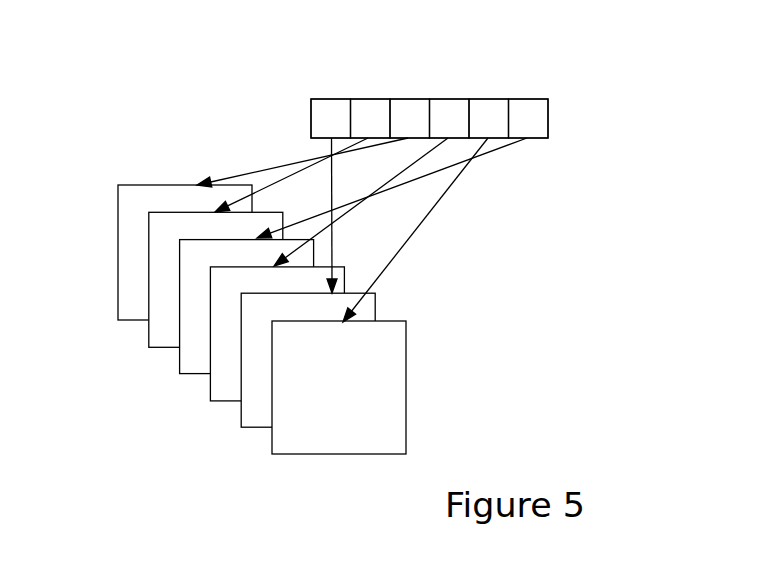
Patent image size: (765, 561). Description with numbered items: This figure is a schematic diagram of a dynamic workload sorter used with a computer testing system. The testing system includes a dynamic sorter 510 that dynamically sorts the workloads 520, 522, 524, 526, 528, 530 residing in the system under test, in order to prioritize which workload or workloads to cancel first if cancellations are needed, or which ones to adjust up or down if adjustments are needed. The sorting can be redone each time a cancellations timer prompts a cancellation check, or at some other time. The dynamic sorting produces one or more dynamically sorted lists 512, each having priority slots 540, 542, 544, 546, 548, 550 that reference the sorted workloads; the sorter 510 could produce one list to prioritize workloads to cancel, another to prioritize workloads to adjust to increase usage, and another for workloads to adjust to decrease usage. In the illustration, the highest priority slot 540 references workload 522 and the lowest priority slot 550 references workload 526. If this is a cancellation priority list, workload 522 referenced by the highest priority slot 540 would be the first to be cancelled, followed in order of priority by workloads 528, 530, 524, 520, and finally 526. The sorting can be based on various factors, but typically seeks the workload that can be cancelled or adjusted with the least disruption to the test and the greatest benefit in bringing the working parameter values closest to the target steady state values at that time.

The dynamic sorter 510 is at (250, 67).
The dynamically sorted list 512 is at (548, 123).
The workload 520 is at (287, 454).
The workload 522 is at (255, 427).
The workload 524 is at (223, 400).
The workload 526 is at (192, 373).
The workload 528 is at (160, 347).
The workload 530 is at (128, 320).
The highest priority slot 540 is at (332, 110).
The priority slot 542 is at (371, 110).
The priority slot 544 is at (412, 110).
The priority slot 546 is at (452, 110).
The priority slot 548 is at (492, 110).
The lowest priority slot 550 is at (530, 110).